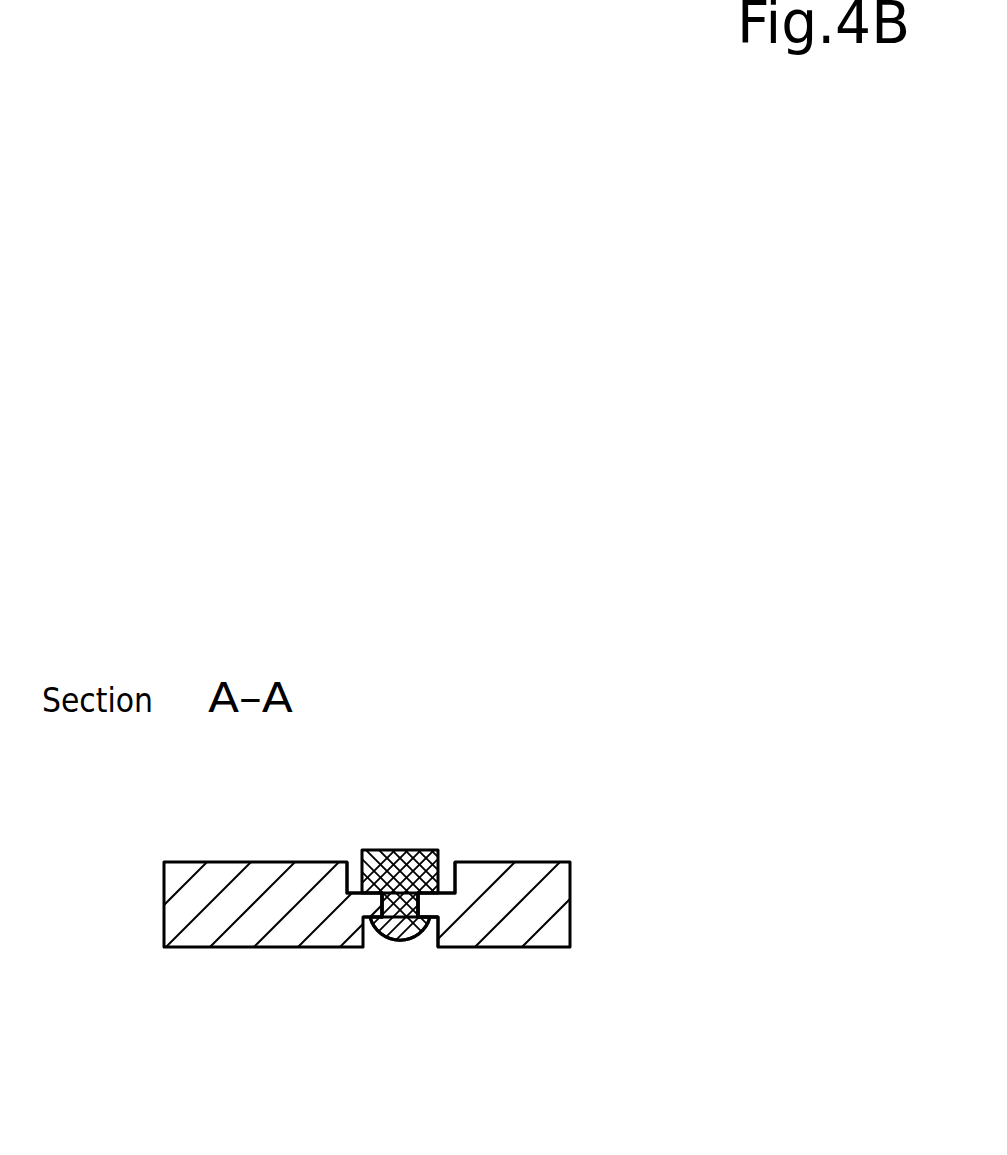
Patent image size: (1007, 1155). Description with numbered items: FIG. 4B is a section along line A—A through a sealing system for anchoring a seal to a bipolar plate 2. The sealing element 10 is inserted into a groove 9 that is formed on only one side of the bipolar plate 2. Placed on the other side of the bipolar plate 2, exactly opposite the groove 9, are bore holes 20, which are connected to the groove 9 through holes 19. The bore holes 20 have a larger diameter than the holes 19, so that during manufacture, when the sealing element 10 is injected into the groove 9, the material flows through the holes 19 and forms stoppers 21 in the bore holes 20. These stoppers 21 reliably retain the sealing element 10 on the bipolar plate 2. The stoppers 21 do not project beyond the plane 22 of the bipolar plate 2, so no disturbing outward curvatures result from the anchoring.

The bipolar plate 2 is at (542, 893).
The groove 9 is at (360, 900).
The sealing element 10 is at (389, 866).
The holes 19 is at (427, 908).
The bore holes 20 is at (373, 932).
The stoppers 21 is at (423, 942).
The plane 22 is at (193, 950).